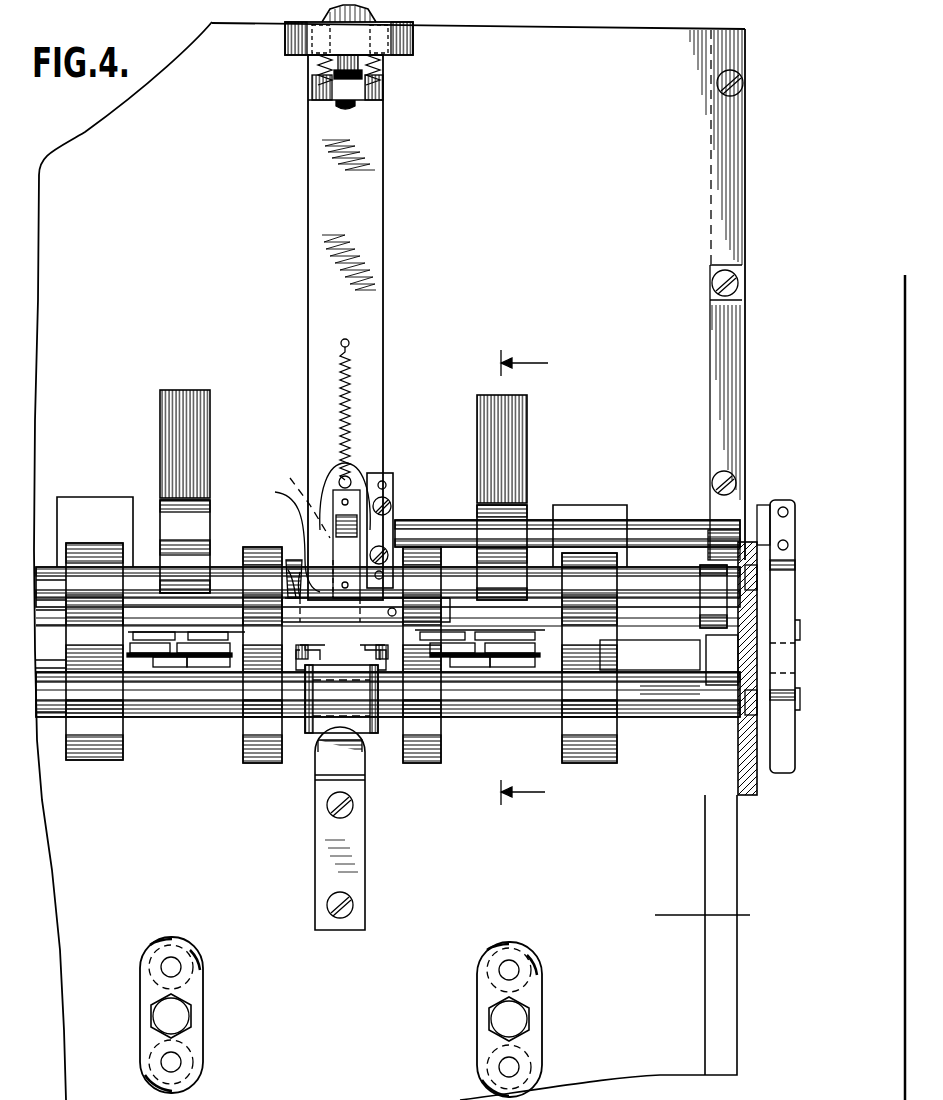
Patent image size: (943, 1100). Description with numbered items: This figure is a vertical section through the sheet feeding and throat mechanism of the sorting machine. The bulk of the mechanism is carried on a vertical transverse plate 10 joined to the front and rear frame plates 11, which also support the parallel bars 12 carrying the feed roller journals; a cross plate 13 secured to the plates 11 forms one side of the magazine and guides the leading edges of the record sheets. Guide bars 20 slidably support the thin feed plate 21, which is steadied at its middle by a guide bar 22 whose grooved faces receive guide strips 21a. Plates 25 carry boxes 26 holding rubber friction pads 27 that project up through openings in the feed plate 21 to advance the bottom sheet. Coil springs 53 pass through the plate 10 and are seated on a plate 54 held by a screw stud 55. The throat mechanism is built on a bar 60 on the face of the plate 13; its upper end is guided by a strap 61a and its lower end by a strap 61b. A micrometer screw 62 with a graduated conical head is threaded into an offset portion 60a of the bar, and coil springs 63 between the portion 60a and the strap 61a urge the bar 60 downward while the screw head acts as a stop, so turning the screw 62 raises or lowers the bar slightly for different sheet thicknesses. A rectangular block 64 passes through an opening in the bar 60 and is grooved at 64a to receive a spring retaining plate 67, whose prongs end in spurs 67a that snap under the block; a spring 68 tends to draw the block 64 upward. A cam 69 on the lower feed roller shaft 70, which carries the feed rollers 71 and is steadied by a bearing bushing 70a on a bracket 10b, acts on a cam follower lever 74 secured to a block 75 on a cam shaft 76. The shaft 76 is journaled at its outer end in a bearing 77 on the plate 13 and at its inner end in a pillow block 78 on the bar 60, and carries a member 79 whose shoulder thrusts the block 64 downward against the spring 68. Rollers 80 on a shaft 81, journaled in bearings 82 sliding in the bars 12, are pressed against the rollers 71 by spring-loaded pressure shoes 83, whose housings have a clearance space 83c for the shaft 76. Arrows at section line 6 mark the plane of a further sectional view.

The vertical transverse plate 10 is at (714, 915).
The bracket 10b is at (362, 856).
The frame plates 11 is at (708, 200).
The parallel bars 12 is at (745, 795).
The cross plate 13 is at (208, 46).
The guide bars 20 is at (690, 665).
The feed plate 21 is at (640, 642).
The guide strips 21a is at (306, 660).
The guide bar 22 is at (341, 689).
The plates 25 is at (150, 660).
The box 26 is at (204, 646).
The friction pad 27 is at (150, 628).
The coil springs 53 is at (150, 1058).
The plate 54 is at (200, 1048).
The screw stud 55 is at (175, 1018).
The bar 60 is at (383, 190).
The offset portion 60a is at (357, 88).
The strap 61a is at (352, 43).
The strap 61b is at (296, 582).
The micrometer screw 62 is at (335, 16).
The coil springs 63 is at (316, 62).
The rectangular block 64 is at (336, 496).
The vertical grooves 64a is at (292, 496).
The spring retaining plate 67 is at (351, 474).
The spurs 67a is at (279, 534).
The spring 68 is at (352, 373).
The cam 69 is at (783, 760).
The lower feed roller shaft 70 is at (642, 717).
The bearing bushing 70a is at (318, 735).
The feed rollers 71 is at (86, 740).
The cam follower lever 74 is at (780, 655).
The block 75 is at (762, 520).
The cam shaft 76 is at (588, 530).
The bearing 77 is at (725, 530).
The pillow block 78 is at (383, 546).
The member 79 is at (386, 500).
The rollers 80 is at (87, 558).
The shaft 81 is at (44, 585).
The bearings 82 is at (710, 585).
The pressure shoes 83 is at (492, 577).
The clearance space 83c is at (175, 522).
The section line 6 is at (517, 577).